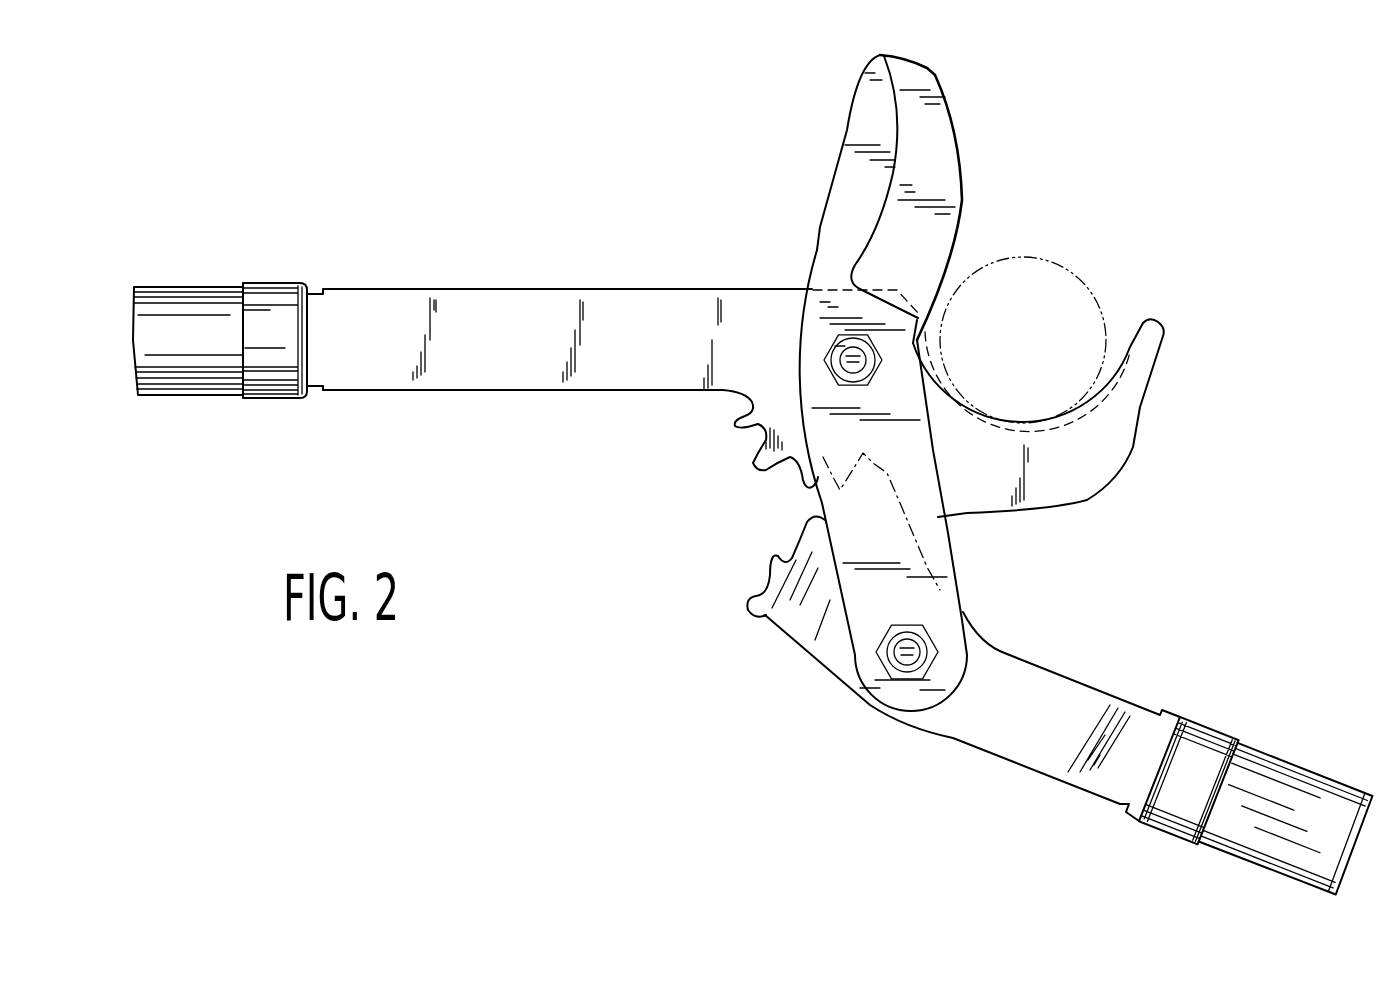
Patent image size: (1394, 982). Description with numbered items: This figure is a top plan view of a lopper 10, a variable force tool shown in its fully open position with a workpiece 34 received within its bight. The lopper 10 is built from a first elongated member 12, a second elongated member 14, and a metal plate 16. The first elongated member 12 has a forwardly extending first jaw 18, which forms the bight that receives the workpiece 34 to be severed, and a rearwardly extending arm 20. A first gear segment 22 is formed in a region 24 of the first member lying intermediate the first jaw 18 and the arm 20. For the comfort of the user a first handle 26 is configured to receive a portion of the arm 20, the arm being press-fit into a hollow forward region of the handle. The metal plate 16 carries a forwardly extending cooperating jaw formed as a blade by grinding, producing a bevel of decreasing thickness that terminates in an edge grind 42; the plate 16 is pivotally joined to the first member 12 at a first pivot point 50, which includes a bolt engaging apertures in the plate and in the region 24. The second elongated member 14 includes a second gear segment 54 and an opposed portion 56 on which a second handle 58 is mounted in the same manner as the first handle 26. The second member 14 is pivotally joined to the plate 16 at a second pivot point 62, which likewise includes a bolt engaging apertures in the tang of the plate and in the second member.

The lopper 10 is at (612, 154).
The first elongated member 12 is at (490, 284).
The second elongated member 14 is at (1110, 687).
The metal plate 16 is at (834, 127).
The first jaw 18 is at (1140, 402).
The arm 20 is at (480, 380).
The first gear segment 22 is at (740, 424).
The region 24 is at (767, 347).
The first handle 26 is at (206, 385).
The workpiece 34 is at (1073, 270).
The edge grind 42 is at (963, 200).
The first pivot point 50 is at (826, 338).
The second gear segment 54 is at (768, 614).
The opposed portion 56 is at (1027, 760).
The second handle 58 is at (1217, 842).
The second pivot point 62 is at (903, 688).